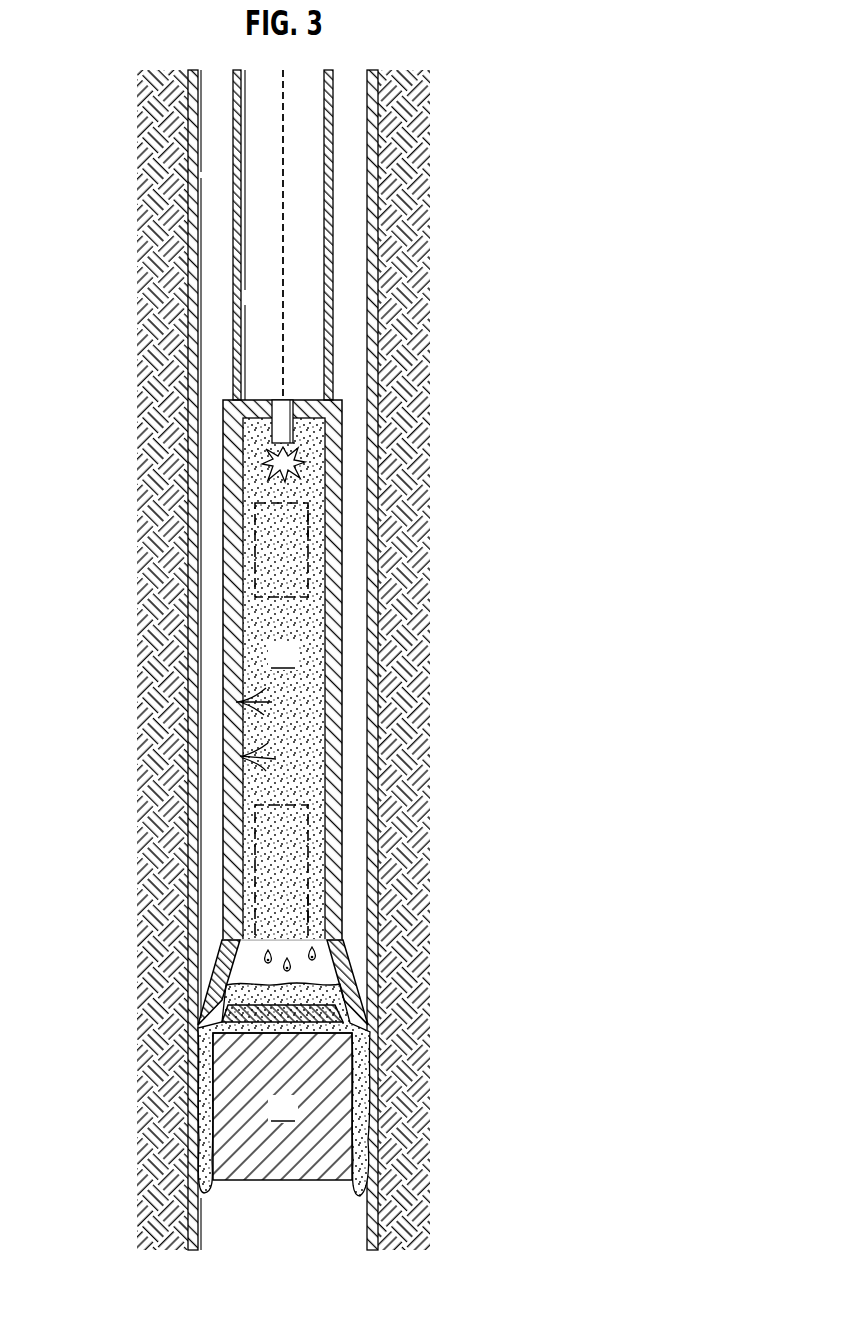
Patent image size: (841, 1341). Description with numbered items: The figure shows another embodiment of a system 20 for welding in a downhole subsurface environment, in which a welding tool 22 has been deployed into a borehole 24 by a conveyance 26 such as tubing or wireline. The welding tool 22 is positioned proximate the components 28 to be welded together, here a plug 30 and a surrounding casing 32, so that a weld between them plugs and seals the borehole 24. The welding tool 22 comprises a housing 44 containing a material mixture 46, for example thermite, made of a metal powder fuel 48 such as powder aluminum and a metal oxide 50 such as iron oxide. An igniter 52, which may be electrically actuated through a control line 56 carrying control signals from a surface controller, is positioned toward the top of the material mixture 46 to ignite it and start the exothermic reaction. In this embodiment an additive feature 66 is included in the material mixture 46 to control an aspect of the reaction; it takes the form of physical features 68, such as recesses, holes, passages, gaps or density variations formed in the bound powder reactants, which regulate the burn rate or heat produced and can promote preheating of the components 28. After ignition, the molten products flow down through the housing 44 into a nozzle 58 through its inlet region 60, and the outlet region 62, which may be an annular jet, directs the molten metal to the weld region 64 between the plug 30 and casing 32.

The system 20 is at (174, 137).
The welding tool 22 is at (282, 670).
The borehole 24 is at (216, 327).
The conveyance 26 is at (333, 238).
The components 28 is at (378, 1095).
The plug 30 is at (282, 1106).
The casing 32 is at (378, 753).
The housing 44 is at (342, 688).
The material mixture 46 is at (282, 679).
The metal powder fuel 48 is at (243, 757).
The metal oxide 50 is at (238, 702).
The igniter 52 is at (288, 428).
The control line 56 is at (283, 127).
The nozzle 58 is at (206, 961).
The inlet region 60 is at (248, 934).
The outlet region 62 is at (353, 1003).
The weld region 64 is at (186, 1107).
The additive feature 66 is at (308, 568).
The physical features 68 is at (310, 527).